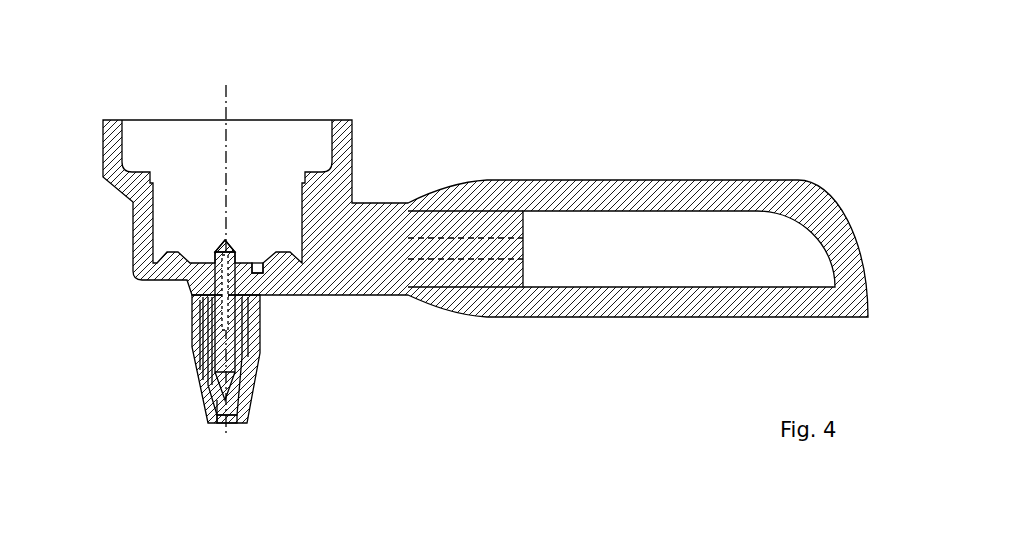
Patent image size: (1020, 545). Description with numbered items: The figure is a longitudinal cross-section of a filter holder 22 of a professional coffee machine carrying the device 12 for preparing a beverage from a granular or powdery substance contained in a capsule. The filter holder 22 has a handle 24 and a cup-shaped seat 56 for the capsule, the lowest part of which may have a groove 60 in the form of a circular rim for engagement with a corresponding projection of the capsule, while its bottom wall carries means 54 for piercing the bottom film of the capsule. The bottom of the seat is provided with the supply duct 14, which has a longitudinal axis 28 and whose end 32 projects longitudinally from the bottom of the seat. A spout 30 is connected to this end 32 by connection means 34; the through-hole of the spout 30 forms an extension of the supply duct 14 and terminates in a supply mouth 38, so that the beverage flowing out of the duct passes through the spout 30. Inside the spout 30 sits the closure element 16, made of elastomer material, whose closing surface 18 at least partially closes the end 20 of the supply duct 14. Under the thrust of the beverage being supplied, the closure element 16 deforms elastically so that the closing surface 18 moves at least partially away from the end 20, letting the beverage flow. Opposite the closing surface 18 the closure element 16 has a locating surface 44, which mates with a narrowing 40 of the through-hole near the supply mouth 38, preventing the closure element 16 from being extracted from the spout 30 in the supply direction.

The device 12 is at (170, 372).
The supply duct 14 is at (233, 309).
The closure element 16 is at (233, 365).
The closing surface 18 is at (220, 333).
The end of the supply duct 20 is at (233, 360).
The filter holder 22 is at (546, 158).
The handle 24 is at (690, 181).
The longitudinal axis 28 is at (232, 88).
The spout 30 is at (192, 315).
The end of the supply duct 32 is at (208, 302).
The connection means 34 is at (256, 297).
The supply mouth 38 is at (235, 413).
The narrowing 40 is at (215, 377).
The locating surface 44 is at (215, 387).
The means for piercing 54 is at (198, 245).
The cup-shaped seat 56 is at (303, 201).
The groove 60 is at (293, 262).